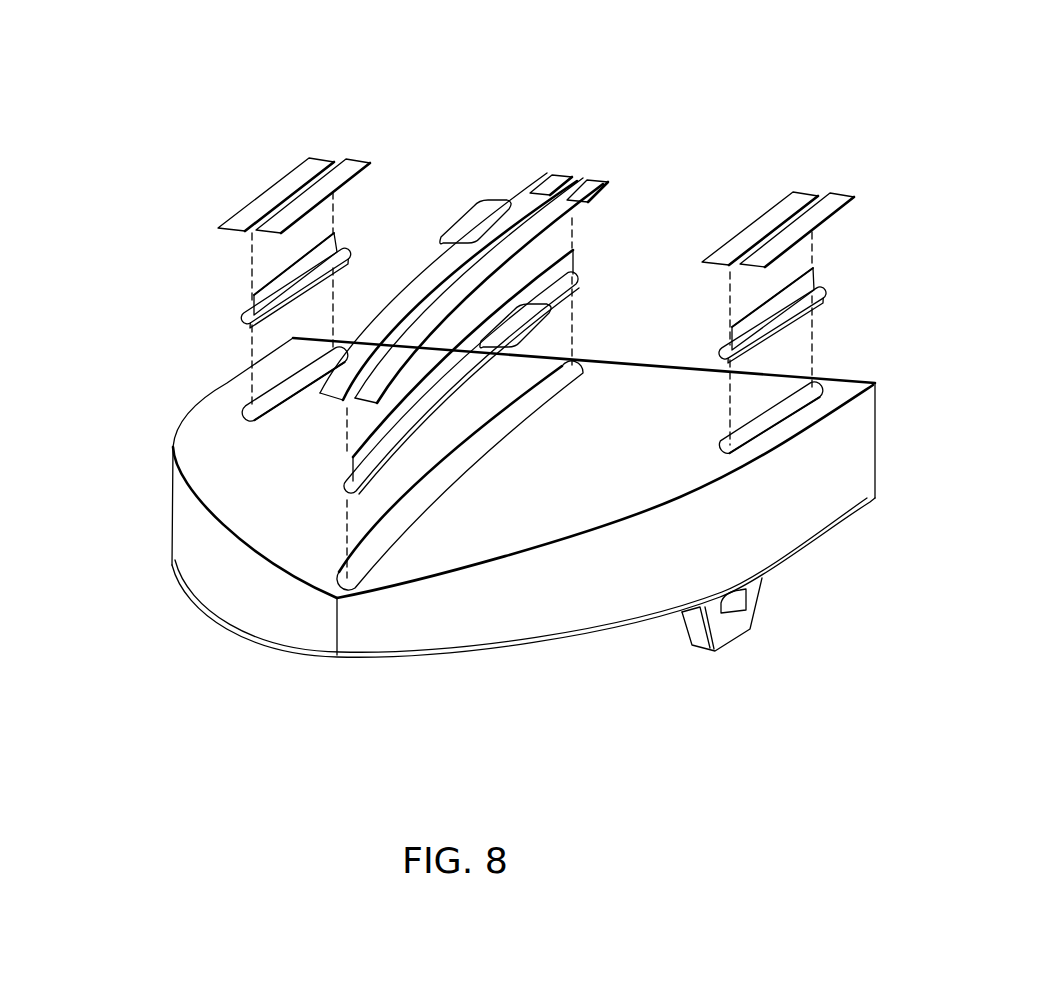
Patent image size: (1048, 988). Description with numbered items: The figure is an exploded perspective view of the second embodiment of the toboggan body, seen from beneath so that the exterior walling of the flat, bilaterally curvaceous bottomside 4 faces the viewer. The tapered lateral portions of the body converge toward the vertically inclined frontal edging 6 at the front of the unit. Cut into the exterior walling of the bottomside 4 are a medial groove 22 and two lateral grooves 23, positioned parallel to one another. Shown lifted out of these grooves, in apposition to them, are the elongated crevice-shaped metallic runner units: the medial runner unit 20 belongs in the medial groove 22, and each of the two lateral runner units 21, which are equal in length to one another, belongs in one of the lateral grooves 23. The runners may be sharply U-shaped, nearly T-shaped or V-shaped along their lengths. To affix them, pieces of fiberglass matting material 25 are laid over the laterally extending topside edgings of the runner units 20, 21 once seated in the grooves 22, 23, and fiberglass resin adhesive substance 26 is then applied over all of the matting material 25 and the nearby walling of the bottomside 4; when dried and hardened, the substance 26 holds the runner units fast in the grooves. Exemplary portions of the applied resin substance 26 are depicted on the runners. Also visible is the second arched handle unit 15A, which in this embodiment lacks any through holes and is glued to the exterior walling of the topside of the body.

The bottomside 4 is at (527, 517).
The frontal edging 6 is at (338, 630).
The second arched handle unit 15A is at (722, 635).
The medial runner unit 20 is at (583, 252).
The lateral runner units 21 is at (240, 313).
The medial groove 22 is at (360, 567).
The lateral grooves 23 is at (260, 405).
The fiberglass matting material 25 is at (362, 158).
The fiberglass resin adhesive substance 26 is at (483, 207).